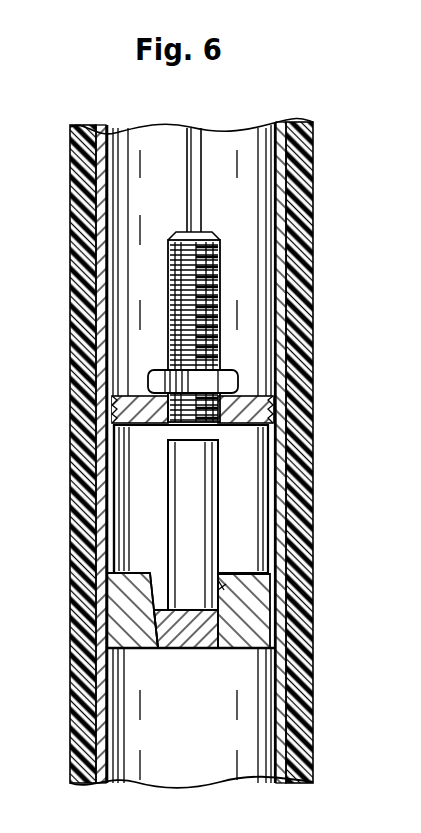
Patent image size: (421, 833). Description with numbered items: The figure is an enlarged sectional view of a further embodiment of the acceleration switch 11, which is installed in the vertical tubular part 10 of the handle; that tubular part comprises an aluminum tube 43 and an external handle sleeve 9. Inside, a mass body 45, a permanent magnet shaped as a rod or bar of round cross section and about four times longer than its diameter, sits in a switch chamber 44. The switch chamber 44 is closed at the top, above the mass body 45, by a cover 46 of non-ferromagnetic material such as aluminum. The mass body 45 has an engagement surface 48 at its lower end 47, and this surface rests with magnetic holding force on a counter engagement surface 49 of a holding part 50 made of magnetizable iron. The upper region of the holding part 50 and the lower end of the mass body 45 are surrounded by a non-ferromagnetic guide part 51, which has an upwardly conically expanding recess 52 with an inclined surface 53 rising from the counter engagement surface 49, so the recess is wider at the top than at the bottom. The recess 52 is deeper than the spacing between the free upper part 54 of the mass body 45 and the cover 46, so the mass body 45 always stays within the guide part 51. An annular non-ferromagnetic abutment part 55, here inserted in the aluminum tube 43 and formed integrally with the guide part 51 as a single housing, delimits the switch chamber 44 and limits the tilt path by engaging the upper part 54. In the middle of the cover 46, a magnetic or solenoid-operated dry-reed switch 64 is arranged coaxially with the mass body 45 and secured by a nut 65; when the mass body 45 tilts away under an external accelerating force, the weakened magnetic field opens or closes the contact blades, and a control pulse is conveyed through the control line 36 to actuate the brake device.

The vertical tubular part 10 is at (98, 124).
The external handle sleeve 9 is at (71, 150).
The aluminum tube 43 is at (100, 181).
The acceleration switch 11 is at (355, 184).
The control lines 36 is at (187, 195).
The magnetic or solenoid-operated switch 64 is at (175, 263).
The nut 65 is at (163, 382).
The cover 46 is at (112, 407).
The switch chamber 44 is at (253, 458).
The abutment part 55 is at (112, 495).
The mass body 45 is at (190, 527).
The free upper part 54 is at (218, 441).
The guide part 51 is at (130, 611).
The counter engagement surface 49 is at (205, 605).
The engagement surface 48 is at (210, 627).
The lower end 47 is at (228, 600).
The holding part 50 is at (183, 636).
The recess 52 is at (223, 585).
The inclined surface 53 is at (222, 588).